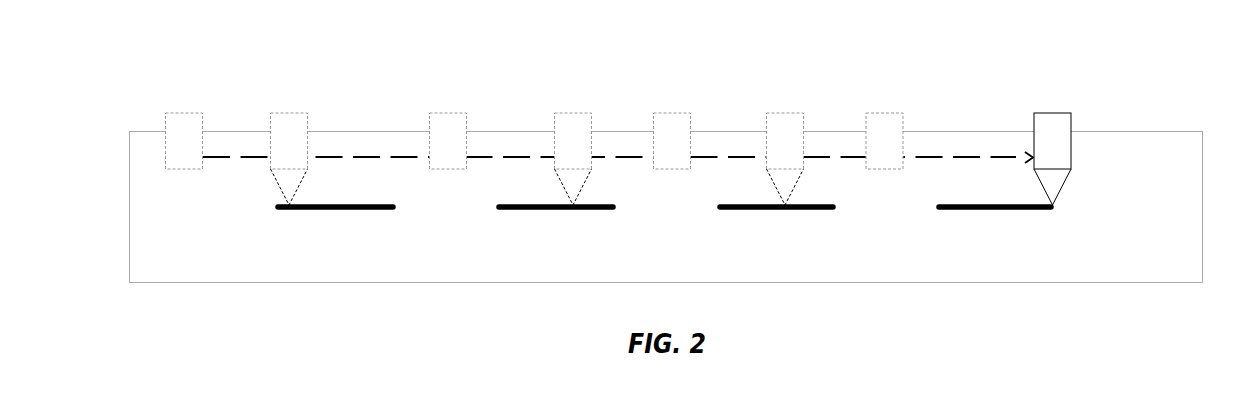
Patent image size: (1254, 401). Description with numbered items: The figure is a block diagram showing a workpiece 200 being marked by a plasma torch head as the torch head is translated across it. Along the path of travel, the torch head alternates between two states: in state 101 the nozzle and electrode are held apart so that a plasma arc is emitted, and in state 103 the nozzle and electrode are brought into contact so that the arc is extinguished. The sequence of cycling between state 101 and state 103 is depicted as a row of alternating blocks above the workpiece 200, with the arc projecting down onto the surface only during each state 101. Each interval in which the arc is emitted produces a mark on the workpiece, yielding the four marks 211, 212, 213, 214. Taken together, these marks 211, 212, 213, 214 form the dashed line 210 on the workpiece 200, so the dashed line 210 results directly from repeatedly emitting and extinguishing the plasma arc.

The state 101 is at (288, 131).
The state 103 is at (183, 131).
The workpiece 200 is at (1136, 197).
The dashed line 210 is at (607, 241).
The mark 211 is at (383, 210).
The mark 212 is at (595, 210).
The mark 213 is at (818, 210).
The mark 214 is at (979, 210).